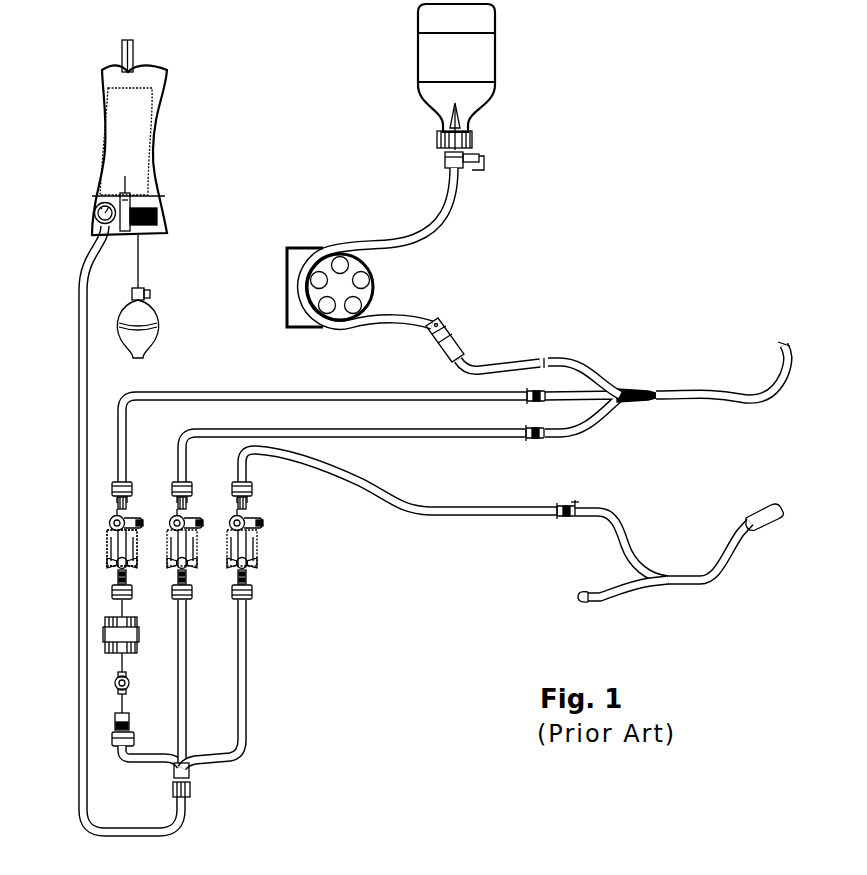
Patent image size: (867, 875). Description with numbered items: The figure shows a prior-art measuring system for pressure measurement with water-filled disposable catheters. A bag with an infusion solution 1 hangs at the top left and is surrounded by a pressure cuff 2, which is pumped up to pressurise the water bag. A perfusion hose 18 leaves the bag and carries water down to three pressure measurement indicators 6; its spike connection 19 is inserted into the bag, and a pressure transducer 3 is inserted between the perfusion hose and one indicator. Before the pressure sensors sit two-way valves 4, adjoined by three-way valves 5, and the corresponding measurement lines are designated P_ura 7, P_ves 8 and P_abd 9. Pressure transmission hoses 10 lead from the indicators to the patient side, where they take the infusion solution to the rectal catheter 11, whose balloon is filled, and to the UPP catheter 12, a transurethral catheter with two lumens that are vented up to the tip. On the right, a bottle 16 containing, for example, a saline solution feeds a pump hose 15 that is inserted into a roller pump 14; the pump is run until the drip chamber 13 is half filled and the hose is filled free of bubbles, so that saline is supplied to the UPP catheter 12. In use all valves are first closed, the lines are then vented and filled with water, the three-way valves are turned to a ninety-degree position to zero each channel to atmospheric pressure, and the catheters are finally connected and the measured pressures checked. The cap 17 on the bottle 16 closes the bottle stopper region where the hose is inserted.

The bag with infusion solution 1 is at (98, 154).
The pressure cuff 2 is at (146, 203).
The pressure transducer 3 is at (107, 645).
The two-way valve 4 is at (108, 564).
The three-way valve 5 is at (172, 521).
The pressure measurement indicator 6 is at (120, 550).
The P_ura line 7 is at (317, 497).
The P_ves line 8 is at (346, 516).
The P_abd line 9 is at (392, 524).
The pressure transmission hose 10 is at (478, 512).
The rectal catheter 11 is at (726, 571).
The UPP catheter 12 is at (751, 396).
The drip chamber 13 is at (452, 333).
The roller pump 14 is at (288, 290).
The pump hose 15 is at (458, 209).
The bottle 16 is at (470, 90).
The bottle cap 17 is at (462, 124).
The perfusion hose 18 is at (79, 400).
The spike connection 19 is at (93, 212).